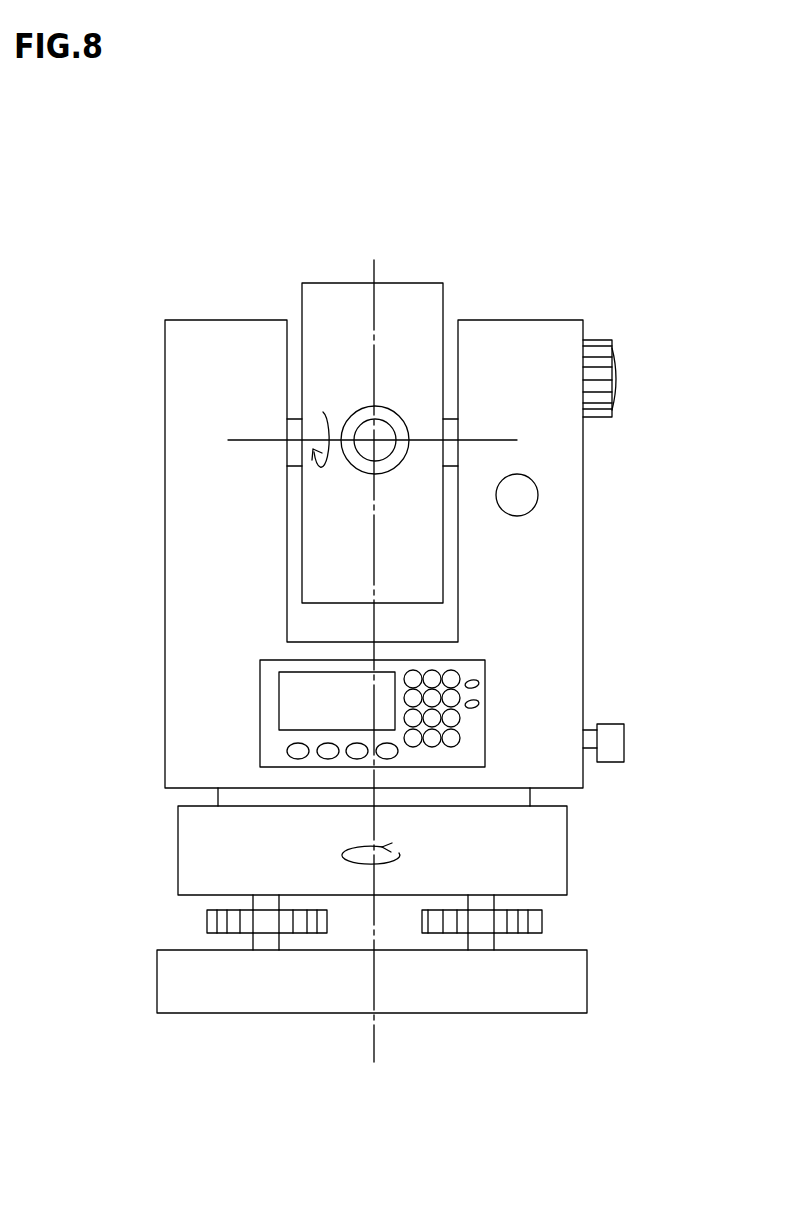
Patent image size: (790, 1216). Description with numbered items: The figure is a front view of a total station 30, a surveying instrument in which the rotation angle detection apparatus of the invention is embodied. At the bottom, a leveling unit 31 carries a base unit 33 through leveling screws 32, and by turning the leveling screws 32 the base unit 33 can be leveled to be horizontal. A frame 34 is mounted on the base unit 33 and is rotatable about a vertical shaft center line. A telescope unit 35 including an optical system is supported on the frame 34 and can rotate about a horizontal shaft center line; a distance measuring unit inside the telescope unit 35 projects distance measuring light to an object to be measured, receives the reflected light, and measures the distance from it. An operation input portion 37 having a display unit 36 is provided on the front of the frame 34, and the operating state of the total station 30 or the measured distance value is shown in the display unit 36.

The total station 30 is at (623, 228).
The leveling unit 31 is at (587, 996).
The leveling screws 32 is at (542, 920).
The base unit 33 is at (567, 836).
The frame 34 is at (165, 508).
The telescope unit 35 is at (303, 297).
The display unit 36 is at (297, 708).
The operation input portion 37 is at (478, 660).